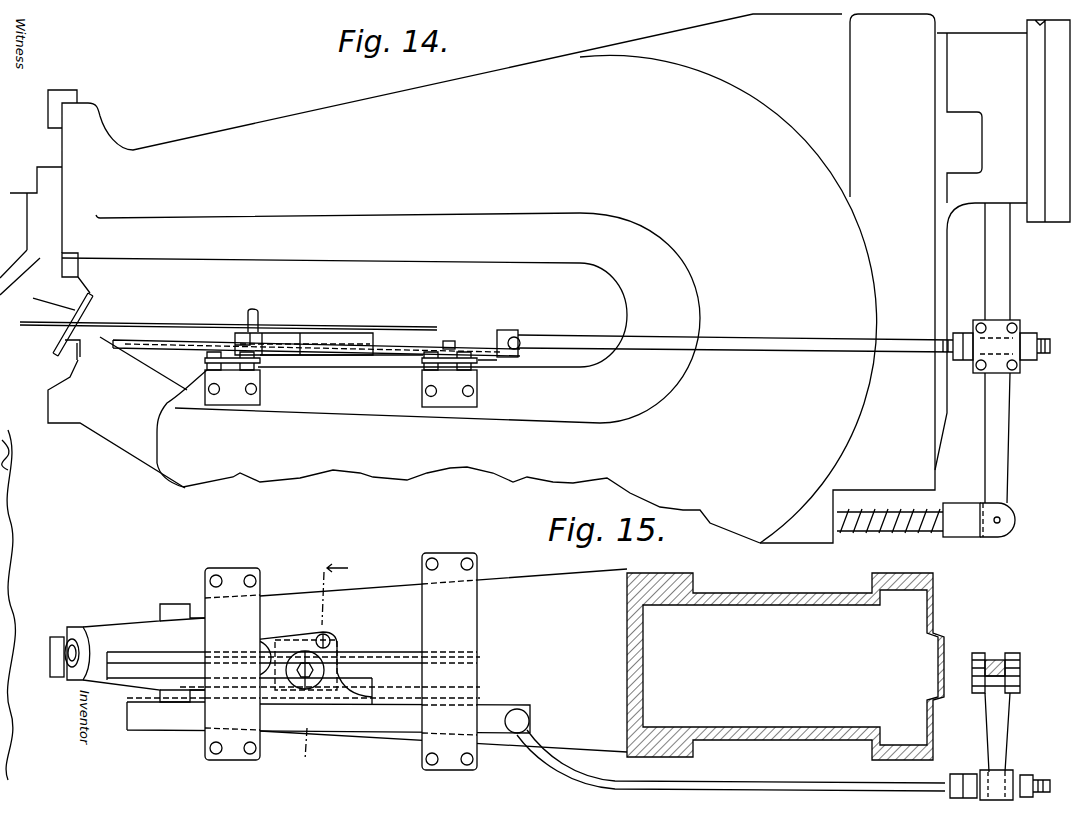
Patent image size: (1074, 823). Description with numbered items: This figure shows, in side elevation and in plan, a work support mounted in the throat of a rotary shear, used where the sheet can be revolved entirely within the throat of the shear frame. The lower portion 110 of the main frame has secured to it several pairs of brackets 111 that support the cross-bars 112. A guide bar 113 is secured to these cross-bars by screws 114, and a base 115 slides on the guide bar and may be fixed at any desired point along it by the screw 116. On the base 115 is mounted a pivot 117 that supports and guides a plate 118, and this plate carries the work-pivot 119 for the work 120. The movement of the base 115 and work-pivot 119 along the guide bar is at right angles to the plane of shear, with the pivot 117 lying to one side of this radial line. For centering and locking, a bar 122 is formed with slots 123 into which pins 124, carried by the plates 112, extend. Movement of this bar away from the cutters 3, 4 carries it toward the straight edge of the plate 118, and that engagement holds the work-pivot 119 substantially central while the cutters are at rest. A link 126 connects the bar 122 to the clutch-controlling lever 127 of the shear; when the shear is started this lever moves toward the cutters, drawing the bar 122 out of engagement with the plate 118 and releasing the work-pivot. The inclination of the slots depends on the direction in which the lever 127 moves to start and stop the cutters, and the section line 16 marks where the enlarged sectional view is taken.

In FIG. 14, the cutter 3 is at (88, 300).
In FIG. 14, the cutter 4 is at (48, 348).
In FIG. 15, the section line 16— 16 is at (322, 666).
In FIG. 14, the lower portion of the main frame 110 is at (398, 318).
In FIG. 14, the brackets 111 is at (341, 388).
In FIG. 14, the cross-bars 112 is at (258, 360).
In FIG. 15, the cross-bars 112 is at (341, 661).
In FIG. 14, the guide bar 113 is at (122, 343).
In FIG. 15, the guide bar 113 is at (165, 660).
In FIG. 15, the screws 114 is at (232, 677).
In FIG. 15, the base 115 is at (290, 640).
In FIG. 15, the screw 116 is at (310, 669).
In FIG. 15, the pivot 117 is at (326, 640).
In FIG. 14, the plate 118 is at (352, 335).
In FIG. 15, the plate 118 is at (277, 640).
In FIG. 14, the work-pivot 119 is at (258, 320).
In FIG. 15, the work-pivot 119 is at (243, 652).
In FIG. 14, the work 120 is at (411, 324).
In FIG. 14, the bar 122 is at (400, 356).
In FIG. 15, the bar 122 is at (352, 701).
In FIG. 15, the slots 123 is at (246, 716).
In FIG. 14, the pins 124 is at (451, 342).
In FIG. 15, the pins 124 is at (236, 712).
In FIG. 14, the link 126 is at (746, 348).
In FIG. 15, the link 126 is at (724, 781).
In FIG. 14, the clutch-controlling lever 127 is at (993, 450).
In FIG. 15, the clutch-controlling lever 127 is at (993, 745).